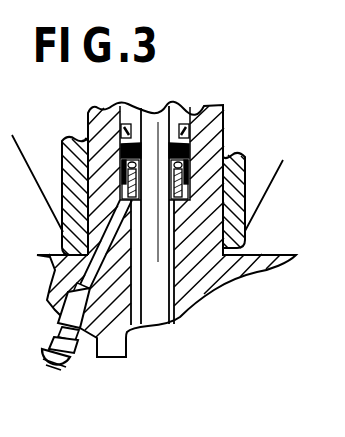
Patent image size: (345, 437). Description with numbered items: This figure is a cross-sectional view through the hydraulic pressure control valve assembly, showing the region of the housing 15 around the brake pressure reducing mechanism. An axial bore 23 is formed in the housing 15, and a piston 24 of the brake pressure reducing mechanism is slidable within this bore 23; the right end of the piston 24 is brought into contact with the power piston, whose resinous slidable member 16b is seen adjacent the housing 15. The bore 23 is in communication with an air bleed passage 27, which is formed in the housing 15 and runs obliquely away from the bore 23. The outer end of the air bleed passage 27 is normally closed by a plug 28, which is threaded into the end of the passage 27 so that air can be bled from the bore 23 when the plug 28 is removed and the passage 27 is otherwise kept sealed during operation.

The housing 15 is at (208, 132).
The resinous slidable member 16b is at (240, 178).
The axial bore 23 is at (176, 284).
The piston 24 is at (152, 282).
The air bleed passage 27 is at (98, 263).
The plug 28 is at (66, 370).